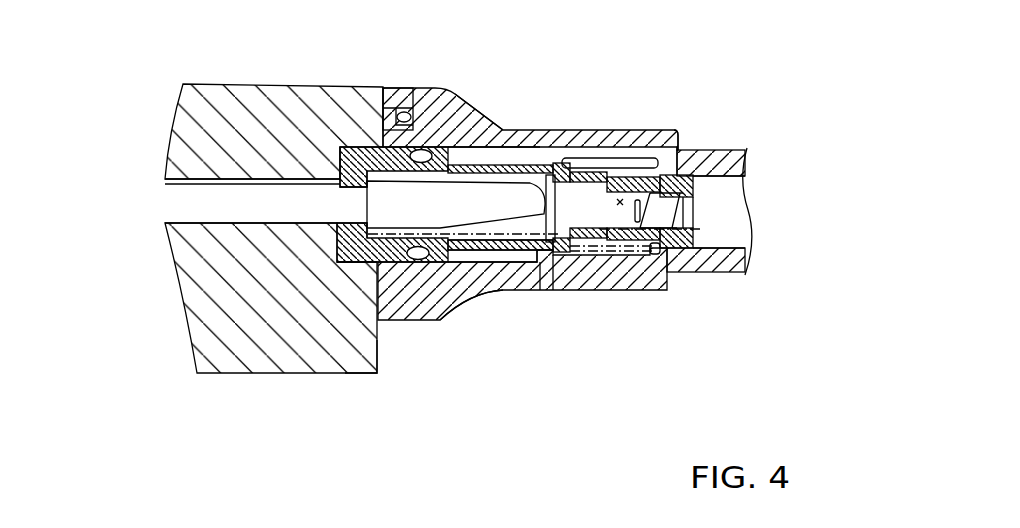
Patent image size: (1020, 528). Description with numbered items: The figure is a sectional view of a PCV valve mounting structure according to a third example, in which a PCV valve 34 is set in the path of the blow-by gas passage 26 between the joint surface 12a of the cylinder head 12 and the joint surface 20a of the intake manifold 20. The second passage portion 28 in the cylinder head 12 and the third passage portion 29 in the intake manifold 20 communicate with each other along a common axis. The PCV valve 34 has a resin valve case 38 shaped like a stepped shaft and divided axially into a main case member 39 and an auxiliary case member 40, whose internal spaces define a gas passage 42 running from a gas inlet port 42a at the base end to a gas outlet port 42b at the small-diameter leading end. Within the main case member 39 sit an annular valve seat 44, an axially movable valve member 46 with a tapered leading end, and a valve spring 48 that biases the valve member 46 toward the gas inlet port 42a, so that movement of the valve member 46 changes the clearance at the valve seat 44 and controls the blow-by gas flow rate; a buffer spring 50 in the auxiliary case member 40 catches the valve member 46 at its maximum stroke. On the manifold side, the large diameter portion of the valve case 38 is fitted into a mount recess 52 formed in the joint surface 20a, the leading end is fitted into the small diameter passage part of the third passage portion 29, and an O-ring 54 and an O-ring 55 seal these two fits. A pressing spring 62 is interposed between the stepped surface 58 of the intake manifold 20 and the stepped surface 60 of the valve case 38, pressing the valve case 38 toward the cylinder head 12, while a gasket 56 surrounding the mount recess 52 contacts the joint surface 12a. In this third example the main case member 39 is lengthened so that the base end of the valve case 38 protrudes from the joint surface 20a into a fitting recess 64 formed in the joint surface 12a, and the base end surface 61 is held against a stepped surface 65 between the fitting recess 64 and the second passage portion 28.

The cylinder head 12 is at (203, 82).
The joint surface 12a is at (378, 373).
The intake manifold 20 is at (718, 146).
The joint surface 20a is at (378, 355).
The blow-by gas passage 26 is at (162, 187).
The second passage portion 28 is at (182, 202).
The third passage portion 29 is at (717, 228).
The PCV valve 34 is at (496, 156).
The valve case 38 is at (563, 272).
The main case member 39 is at (465, 310).
The auxiliary case member 40 is at (640, 242).
The gas passage 42 is at (654, 177).
The gas inlet port 42a is at (362, 185).
The gas outlet port 42b is at (693, 212).
The valve seat 44 is at (554, 163).
The valve member 46 is at (454, 105).
The valve spring 48 is at (517, 265).
The buffer spring 50 is at (657, 186).
The mount recess 52 is at (470, 251).
The O-ring 54 is at (430, 198).
The O-ring 55 is at (676, 168).
The gasket 56 is at (397, 117).
The stepped surface 58 is at (655, 147).
The stepped surface 60 is at (602, 157).
The base end surface 61 is at (370, 222).
The pressing spring 62 is at (622, 185).
The fitting recess 64 is at (350, 262).
The stepped surface 65 is at (345, 250).